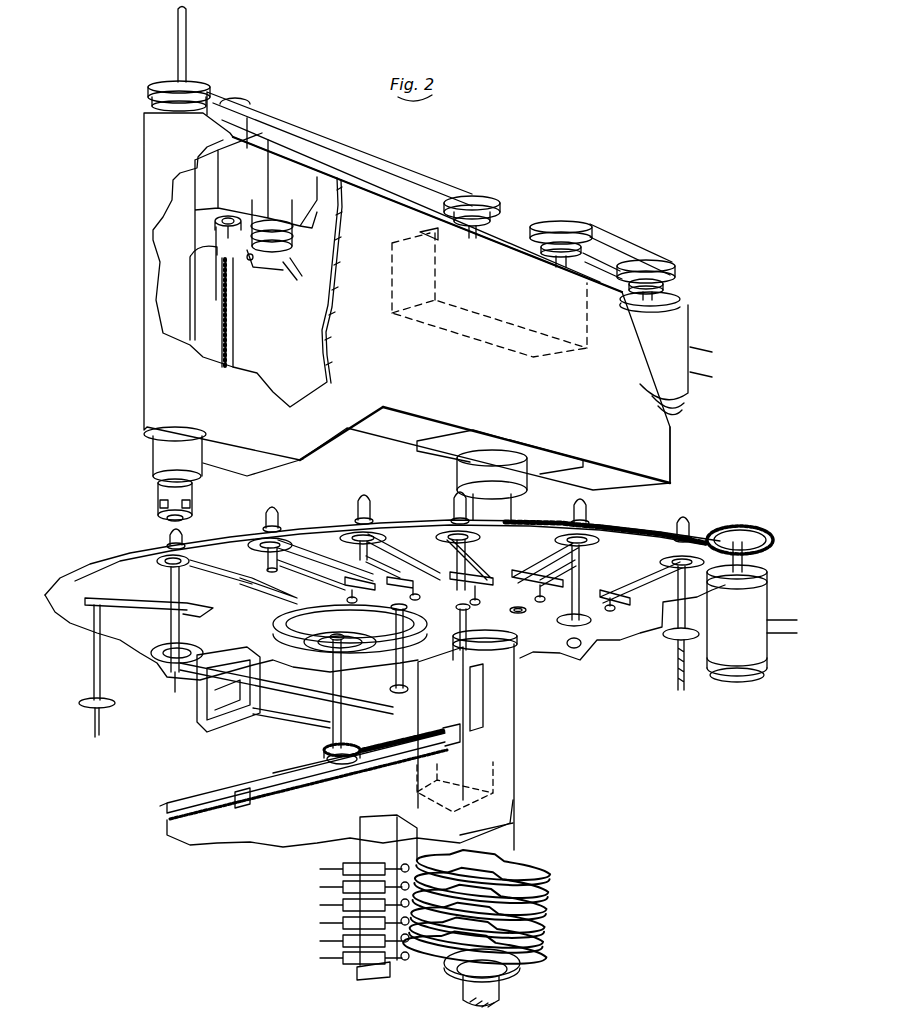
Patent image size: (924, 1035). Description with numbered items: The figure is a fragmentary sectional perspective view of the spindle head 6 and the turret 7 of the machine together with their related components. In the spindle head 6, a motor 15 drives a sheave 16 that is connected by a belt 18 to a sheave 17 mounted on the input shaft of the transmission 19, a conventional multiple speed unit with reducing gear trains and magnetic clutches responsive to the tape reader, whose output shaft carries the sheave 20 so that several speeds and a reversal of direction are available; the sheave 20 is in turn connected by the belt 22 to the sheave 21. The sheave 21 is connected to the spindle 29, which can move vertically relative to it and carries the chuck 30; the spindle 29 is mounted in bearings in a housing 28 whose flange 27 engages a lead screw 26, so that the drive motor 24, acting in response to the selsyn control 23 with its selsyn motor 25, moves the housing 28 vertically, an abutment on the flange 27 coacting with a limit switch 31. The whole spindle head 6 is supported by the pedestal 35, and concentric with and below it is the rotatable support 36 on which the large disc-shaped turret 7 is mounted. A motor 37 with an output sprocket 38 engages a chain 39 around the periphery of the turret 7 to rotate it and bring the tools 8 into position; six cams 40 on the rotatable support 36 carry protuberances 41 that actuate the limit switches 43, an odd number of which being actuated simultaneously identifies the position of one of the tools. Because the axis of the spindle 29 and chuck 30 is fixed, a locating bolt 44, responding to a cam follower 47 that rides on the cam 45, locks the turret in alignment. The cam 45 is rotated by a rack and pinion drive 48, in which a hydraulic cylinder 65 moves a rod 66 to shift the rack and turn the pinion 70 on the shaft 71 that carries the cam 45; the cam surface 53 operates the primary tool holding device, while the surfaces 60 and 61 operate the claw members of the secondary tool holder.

The spindle head 6 is at (678, 445).
The turret 7 is at (627, 633).
The tool 8 is at (573, 650).
The motor 15 is at (678, 332).
The sheave 16 is at (672, 260).
The sheave 17 is at (580, 222).
The belt 18 is at (617, 246).
The transmission 19 is at (498, 260).
The sheave 20 is at (489, 200).
The sheave 21 is at (198, 86).
The belt 22 is at (326, 141).
The selsyn control 23 is at (247, 190).
The drive motor 24 is at (283, 226).
The selsyn motor 25 is at (244, 102).
The lead screw 26 is at (234, 304).
The flange 27 is at (213, 243).
The housing 28 is at (182, 290).
The spindle 29 is at (177, 58).
The chuck 30 is at (183, 495).
The limit switch 31 is at (273, 270).
The pedestal 35 is at (463, 473).
The rotatable support 36 is at (513, 742).
The motor 37 is at (740, 630).
The output sprocket 38 is at (722, 525).
The chain 39 is at (652, 532).
The cam 40 is at (545, 888).
The protuberance 41 is at (547, 907).
The limit switch 43 is at (372, 958).
The locating bolt 44 is at (460, 617).
The cam 45 is at (419, 637).
The cam follower 47 is at (402, 607).
The rack and pinion drive 48 is at (403, 747).
The cam surface 53 is at (330, 600).
The cam surface 60 is at (388, 648).
The cam surface 61 is at (357, 662).
The hydraulic cylinder 65 is at (192, 807).
The rod 66 is at (250, 792).
The pinion 70 is at (323, 753).
The shaft 71 is at (337, 733).